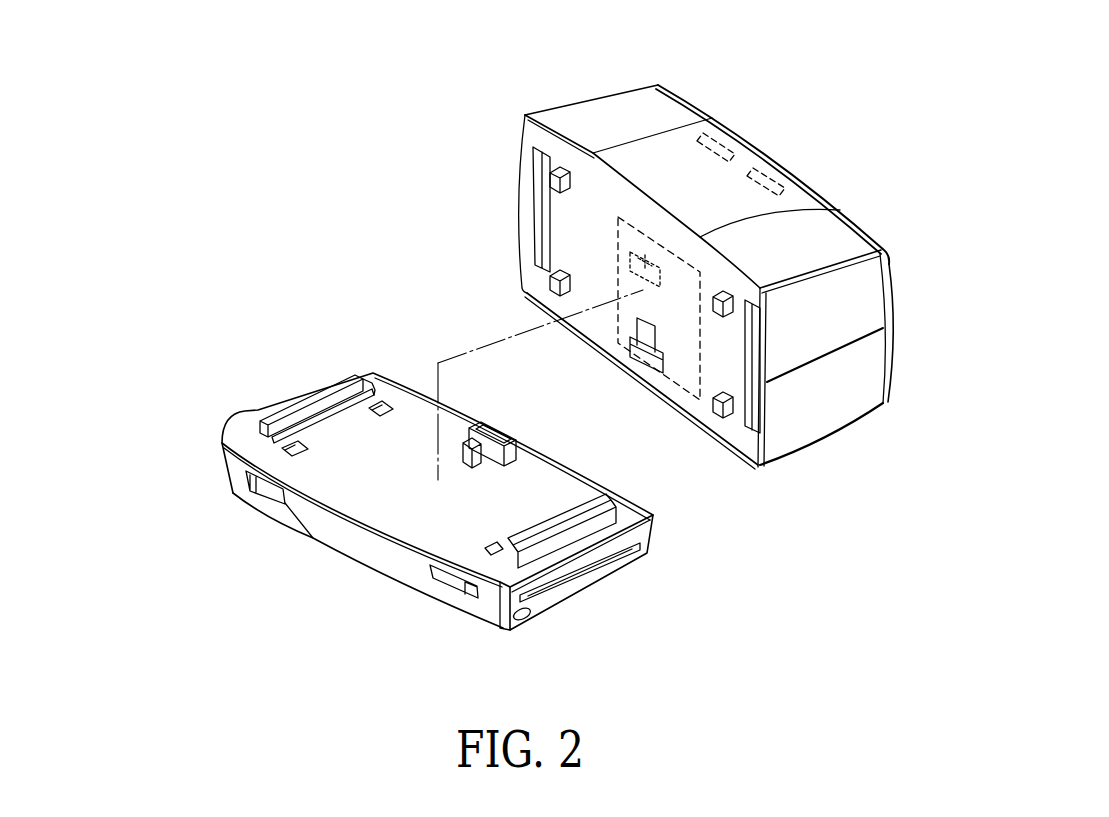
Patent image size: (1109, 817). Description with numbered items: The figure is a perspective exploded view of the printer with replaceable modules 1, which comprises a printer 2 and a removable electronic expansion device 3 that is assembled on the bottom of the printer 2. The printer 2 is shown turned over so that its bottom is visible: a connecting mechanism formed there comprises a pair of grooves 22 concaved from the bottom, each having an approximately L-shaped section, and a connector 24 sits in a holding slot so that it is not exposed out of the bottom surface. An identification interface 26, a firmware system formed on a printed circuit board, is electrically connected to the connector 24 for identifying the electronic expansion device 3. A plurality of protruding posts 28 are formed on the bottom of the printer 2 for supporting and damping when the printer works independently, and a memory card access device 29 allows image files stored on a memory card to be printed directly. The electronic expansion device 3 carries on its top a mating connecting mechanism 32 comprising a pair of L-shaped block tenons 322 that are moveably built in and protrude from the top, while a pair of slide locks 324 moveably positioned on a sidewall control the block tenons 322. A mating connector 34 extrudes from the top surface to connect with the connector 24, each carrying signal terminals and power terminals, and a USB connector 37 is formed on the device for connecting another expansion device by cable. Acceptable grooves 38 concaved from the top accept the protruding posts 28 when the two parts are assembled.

The printer with replaceable modules 1 is at (920, 154).
The printer 2 is at (706, 269).
The electronic expansion device 3 is at (399, 480).
The grooves 22 is at (547, 157).
The connector 24 is at (647, 377).
The identification interface 26 is at (633, 277).
The protruding posts 28 is at (552, 280).
The memory card access device 29 is at (758, 175).
The mating connecting mechanism 32 is at (369, 501).
The block tenons 322 is at (221, 442).
The slide locks 324 is at (433, 573).
The mating connector 34 is at (510, 452).
The USB connector 37 is at (478, 463).
The acceptable grooves 38 is at (296, 443).